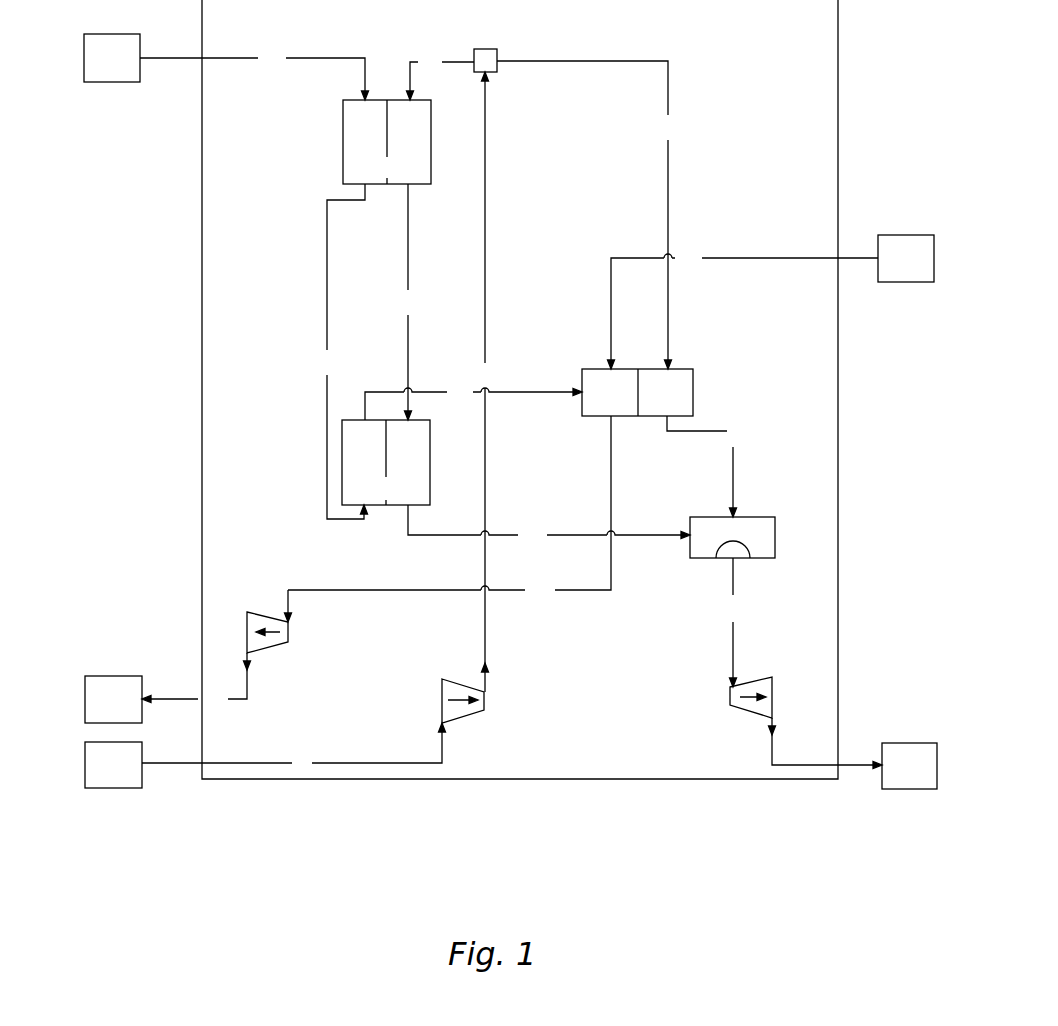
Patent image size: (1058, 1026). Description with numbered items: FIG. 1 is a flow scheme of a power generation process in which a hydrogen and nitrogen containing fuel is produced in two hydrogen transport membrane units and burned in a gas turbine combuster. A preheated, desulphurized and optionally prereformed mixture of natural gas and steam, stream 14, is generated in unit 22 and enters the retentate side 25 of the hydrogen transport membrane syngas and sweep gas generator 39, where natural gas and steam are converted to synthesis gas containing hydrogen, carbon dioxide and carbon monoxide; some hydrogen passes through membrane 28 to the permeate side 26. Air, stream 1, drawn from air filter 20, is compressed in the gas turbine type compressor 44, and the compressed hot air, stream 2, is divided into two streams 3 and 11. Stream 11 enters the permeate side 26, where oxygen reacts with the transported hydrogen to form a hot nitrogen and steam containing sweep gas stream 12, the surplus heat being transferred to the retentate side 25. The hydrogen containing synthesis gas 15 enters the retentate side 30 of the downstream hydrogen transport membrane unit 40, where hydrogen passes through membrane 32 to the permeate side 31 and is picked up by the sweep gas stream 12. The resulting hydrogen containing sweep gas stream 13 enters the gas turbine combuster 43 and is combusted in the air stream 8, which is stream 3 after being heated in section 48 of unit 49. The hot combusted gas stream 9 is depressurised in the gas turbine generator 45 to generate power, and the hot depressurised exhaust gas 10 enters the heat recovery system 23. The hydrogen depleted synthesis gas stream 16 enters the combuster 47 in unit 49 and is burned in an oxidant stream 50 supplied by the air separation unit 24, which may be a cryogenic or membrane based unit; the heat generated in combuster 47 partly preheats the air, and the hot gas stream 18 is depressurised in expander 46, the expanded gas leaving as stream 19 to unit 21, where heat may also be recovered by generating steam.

The air stream 1 is at (294, 750).
The compressed hot air stream 2 is at (486, 382).
The compressed air stream 3 is at (586, 215).
The air stream 8 is at (705, 466).
The hot combusted gas stream 9 is at (733, 622).
The hot depressurised exhaust gas 10 is at (817, 767).
The compressed air stream 11 is at (441, 75).
The sweep gas stream 12 is at (410, 302).
The hydrogen containing sweep gas stream 13 is at (549, 527).
The natural gas and steam mixture stream 14 is at (254, 73).
The hydrogen containing synthesis gas stream 15 is at (340, 351).
The hydrogen depleted synthesis gas stream 16 is at (473, 400).
The hot gas stream 18 is at (449, 510).
The expanded stream 19 is at (212, 700).
The air filter 20 is at (113, 765).
The steam generating heat recovery unit 21 is at (113, 699).
The feed preparation unit 22 is at (112, 58).
The heat recovery system 23 is at (909, 766).
The air separation unit 24 is at (906, 258).
The retentate side 25 is at (367, 143).
The permeate side 26 is at (410, 143).
The membrane 28 is at (390, 170).
The retentate side 30 is at (367, 465).
The second membrane permeate side 31 is at (410, 465).
The membrane 32 is at (387, 490).
The hydrogen transport membrane syngas and sweep gas generator 39 is at (371, 142).
The downstream hydrogen transport membrane unit 40 is at (406, 462).
The gas turbine combuster 43 is at (733, 537).
The gas turbine type compressor 44 is at (489, 712).
The gas turbine generator 45 is at (803, 723).
The expander 46 is at (217, 646).
The combuster 47 is at (611, 392).
The air heating section 48 is at (666, 392).
The combustion and air preheating unit 49 is at (627, 382).
The oxidant stream 50 is at (743, 304).